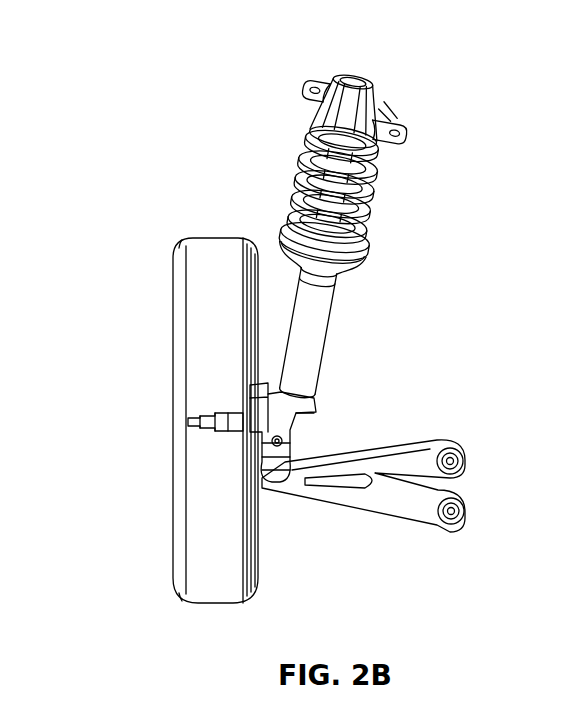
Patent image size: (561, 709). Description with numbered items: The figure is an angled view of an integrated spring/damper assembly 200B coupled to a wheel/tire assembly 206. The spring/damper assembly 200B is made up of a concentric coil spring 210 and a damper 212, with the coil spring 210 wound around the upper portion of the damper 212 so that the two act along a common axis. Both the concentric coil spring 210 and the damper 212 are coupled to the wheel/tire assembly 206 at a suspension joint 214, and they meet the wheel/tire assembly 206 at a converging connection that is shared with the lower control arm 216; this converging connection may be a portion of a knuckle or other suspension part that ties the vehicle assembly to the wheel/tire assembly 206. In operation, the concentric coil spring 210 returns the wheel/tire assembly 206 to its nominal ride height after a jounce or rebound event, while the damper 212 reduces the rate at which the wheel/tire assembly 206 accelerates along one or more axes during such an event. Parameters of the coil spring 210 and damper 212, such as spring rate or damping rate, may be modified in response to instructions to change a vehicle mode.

The spring/damper assembly 200B is at (170, 46).
The wheel/tire assembly 206 is at (202, 335).
The concentric coil spring 210 is at (381, 140).
The damper 212 is at (333, 288).
The suspension joint 214 is at (241, 414).
The lower control arm 216 is at (423, 518).